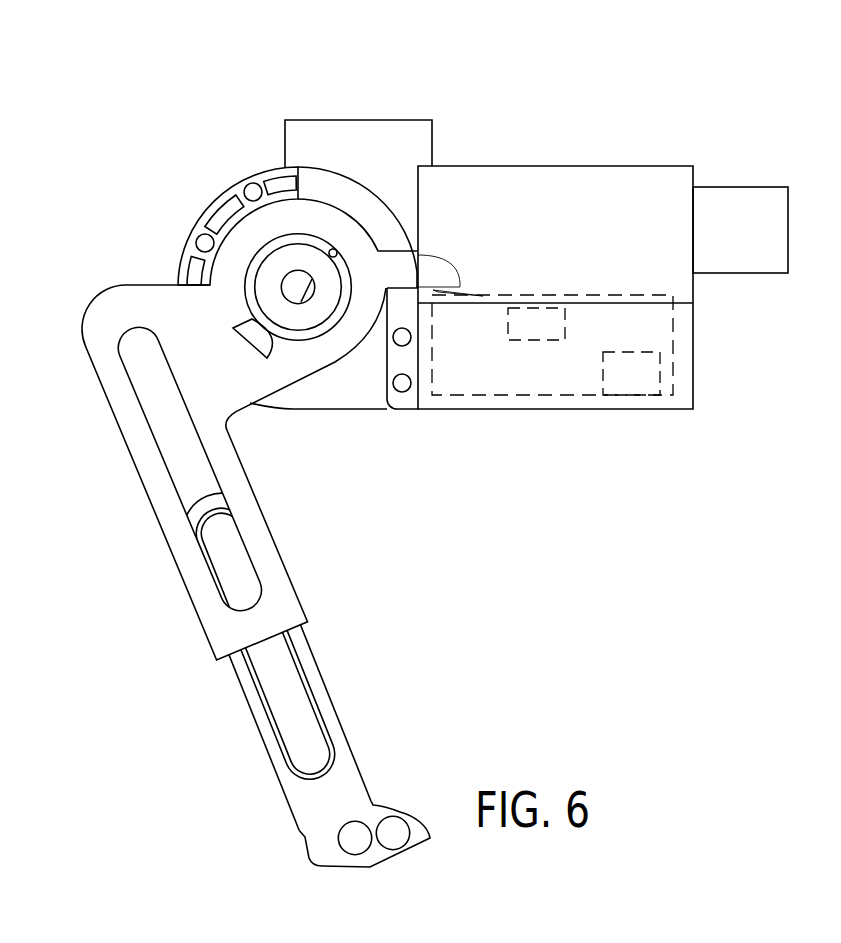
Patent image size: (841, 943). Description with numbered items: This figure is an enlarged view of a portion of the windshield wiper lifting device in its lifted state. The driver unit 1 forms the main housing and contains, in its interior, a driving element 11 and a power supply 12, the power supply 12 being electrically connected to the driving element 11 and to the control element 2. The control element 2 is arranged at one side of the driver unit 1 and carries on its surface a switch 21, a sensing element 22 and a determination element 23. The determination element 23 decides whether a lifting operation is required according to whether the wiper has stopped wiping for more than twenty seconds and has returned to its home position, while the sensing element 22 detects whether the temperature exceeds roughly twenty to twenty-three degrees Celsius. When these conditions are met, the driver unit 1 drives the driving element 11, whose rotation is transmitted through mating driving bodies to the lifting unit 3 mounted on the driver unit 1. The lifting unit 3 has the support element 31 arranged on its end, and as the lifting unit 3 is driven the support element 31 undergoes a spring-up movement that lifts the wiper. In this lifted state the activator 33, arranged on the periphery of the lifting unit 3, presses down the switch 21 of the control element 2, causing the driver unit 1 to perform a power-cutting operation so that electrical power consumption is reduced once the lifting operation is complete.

The driver unit 1 is at (653, 125).
The driving element 11 is at (348, 135).
The power supply 12 is at (743, 248).
The control element 2 is at (562, 395).
The switch 21 is at (442, 290).
The sensing element 22 is at (533, 330).
The determination element 23 is at (628, 380).
The lifting unit 3 is at (205, 212).
The support element 31 is at (183, 553).
The activator 33 is at (445, 272).